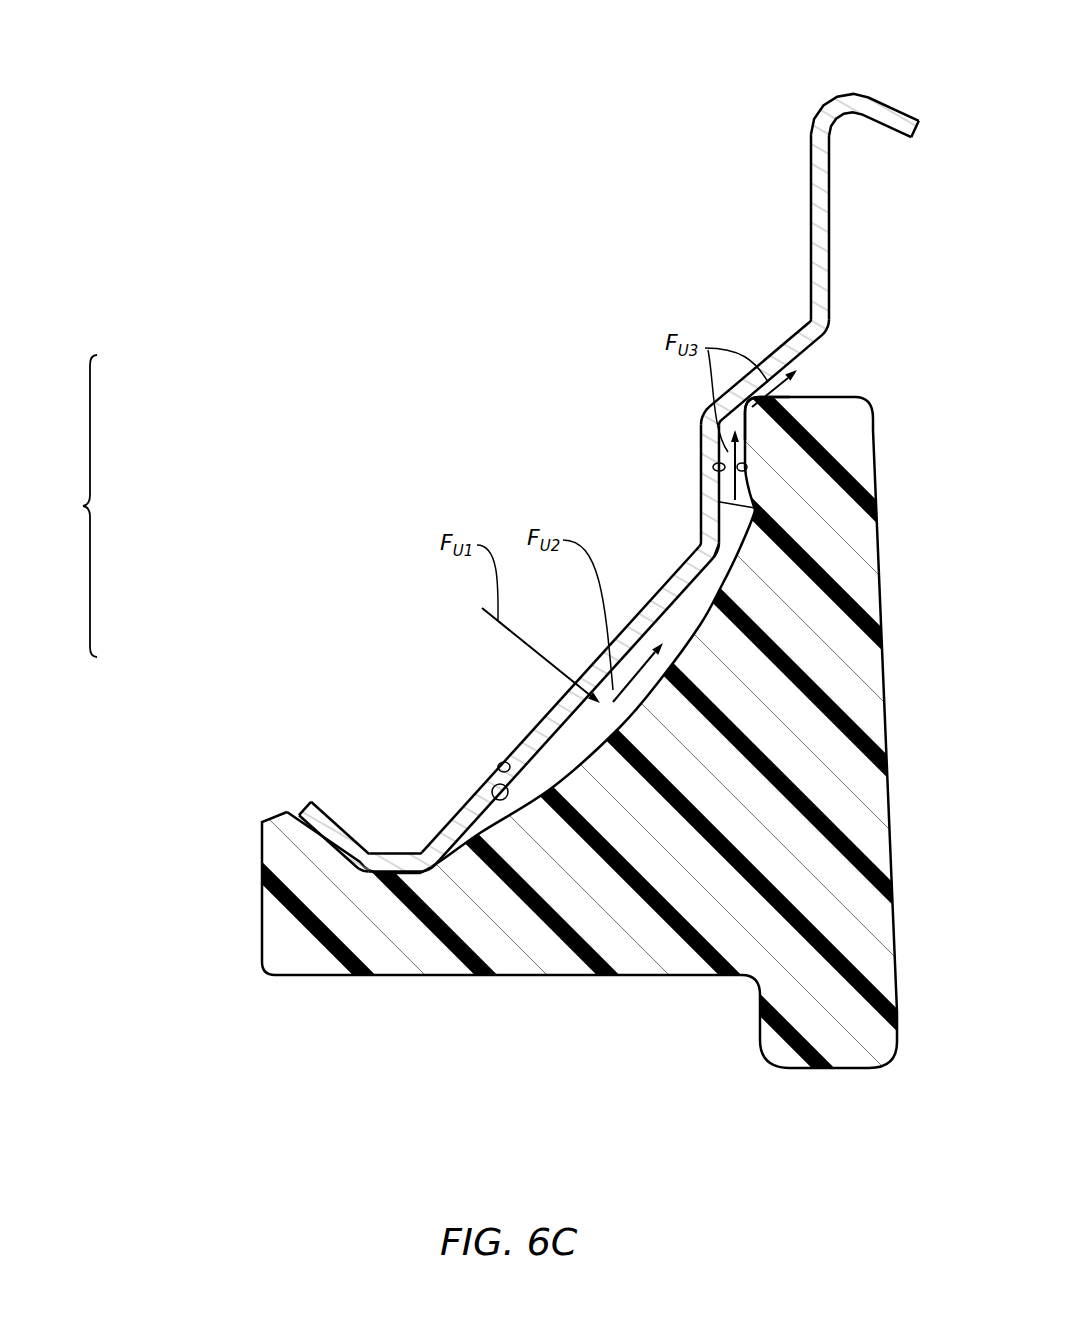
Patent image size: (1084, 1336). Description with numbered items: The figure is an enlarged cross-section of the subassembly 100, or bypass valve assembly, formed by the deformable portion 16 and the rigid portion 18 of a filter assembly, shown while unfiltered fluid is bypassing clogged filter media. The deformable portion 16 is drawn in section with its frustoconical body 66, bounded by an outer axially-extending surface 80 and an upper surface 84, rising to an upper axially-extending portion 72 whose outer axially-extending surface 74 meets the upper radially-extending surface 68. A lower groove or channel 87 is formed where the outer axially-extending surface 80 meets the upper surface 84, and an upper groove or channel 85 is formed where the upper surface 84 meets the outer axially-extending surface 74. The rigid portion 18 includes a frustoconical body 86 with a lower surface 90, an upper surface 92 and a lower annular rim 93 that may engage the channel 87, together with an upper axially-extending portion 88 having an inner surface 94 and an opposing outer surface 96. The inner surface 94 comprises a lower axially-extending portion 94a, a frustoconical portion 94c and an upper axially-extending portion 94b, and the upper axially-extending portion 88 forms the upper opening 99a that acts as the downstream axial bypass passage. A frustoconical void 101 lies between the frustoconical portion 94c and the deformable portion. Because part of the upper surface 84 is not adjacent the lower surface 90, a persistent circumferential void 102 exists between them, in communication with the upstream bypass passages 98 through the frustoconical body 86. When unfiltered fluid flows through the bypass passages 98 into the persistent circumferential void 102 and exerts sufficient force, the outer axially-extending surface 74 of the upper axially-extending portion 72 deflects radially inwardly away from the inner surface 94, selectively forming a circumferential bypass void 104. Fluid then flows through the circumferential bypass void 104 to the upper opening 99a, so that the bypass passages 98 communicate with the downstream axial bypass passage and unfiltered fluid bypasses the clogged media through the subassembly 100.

The deformable portion 16 is at (238, 876).
The rigid portion 18 is at (672, 200).
The frustoconical body 66 is at (608, 930).
The upper radially-extending surface 68 is at (818, 395).
The upper axially-extending portion 72 is at (841, 439).
The outer axially-extending surface 74 is at (750, 467).
The outer axially-extending surface 80 is at (260, 912).
The upper surface 84 is at (573, 767).
The upper groove or channel 85 is at (755, 512).
The frustoconical body 86 is at (430, 808).
The lower groove or channel 87 is at (413, 871).
The upper axially-extending portion 88 is at (682, 483).
The lower surface 90 is at (500, 766).
The upper surface 92 is at (683, 558).
The lower annular rim 93 is at (373, 877).
The inner surface 94 is at (700, 475).
The lower axially-extending portion 94a is at (760, 512).
The upper axially-extending portion 94b is at (832, 205).
The frustoconical portion 94c is at (818, 335).
The outer surface 96 is at (700, 498).
The upstream bypass passages 98 is at (553, 694).
The upper opening 99a is at (945, 133).
The subassembly 100 is at (71, 506).
The frustoconical void 101 is at (840, 361).
The persistent circumferential void 102 is at (533, 757).
The circumferential bypass void 104 is at (748, 415).